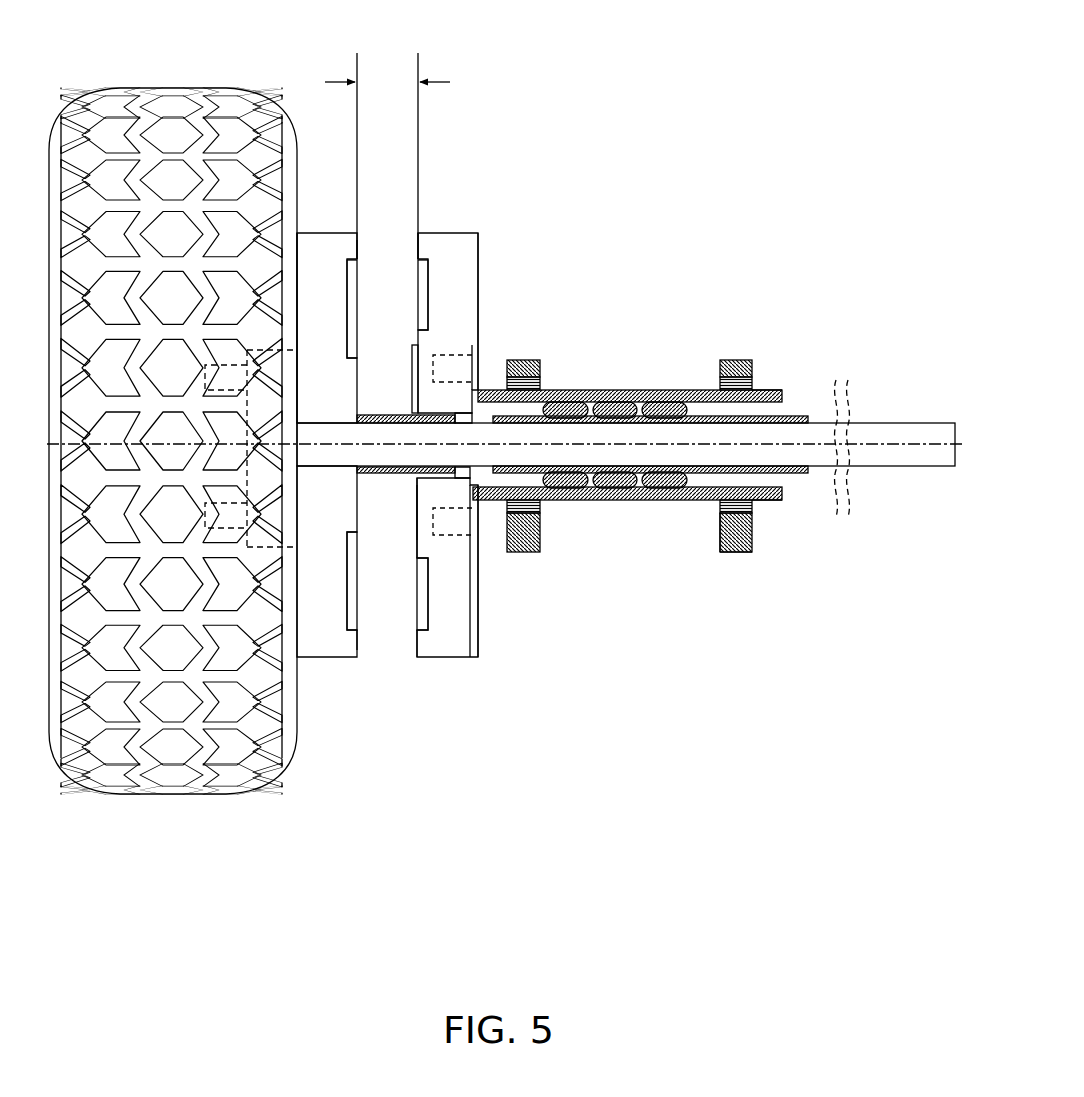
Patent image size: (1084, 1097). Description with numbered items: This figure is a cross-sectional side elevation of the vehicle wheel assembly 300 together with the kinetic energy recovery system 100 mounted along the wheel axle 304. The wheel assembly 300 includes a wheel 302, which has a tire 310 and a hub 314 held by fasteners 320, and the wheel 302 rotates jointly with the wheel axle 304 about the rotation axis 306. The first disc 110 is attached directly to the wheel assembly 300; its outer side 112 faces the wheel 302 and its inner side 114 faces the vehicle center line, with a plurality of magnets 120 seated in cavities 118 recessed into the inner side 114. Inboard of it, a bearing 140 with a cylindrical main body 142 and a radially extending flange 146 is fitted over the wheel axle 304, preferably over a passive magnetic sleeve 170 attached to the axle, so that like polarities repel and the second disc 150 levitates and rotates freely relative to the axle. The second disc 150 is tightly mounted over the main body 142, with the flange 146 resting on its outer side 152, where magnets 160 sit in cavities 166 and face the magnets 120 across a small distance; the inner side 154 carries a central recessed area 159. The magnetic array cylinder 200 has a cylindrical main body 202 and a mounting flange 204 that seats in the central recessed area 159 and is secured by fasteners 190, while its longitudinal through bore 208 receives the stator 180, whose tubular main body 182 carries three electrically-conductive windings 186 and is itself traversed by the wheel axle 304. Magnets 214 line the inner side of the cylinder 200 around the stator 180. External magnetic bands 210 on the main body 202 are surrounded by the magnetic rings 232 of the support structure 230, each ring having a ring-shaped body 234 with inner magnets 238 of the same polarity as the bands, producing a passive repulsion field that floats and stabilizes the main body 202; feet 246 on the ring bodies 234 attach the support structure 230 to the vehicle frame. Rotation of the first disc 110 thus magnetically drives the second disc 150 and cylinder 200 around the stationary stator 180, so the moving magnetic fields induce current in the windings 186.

The kinetic energy recovery system 100 is at (746, 211).
The first disc 110 is at (323, 643).
The outer side 112 is at (298, 232).
The inner side 114 is at (363, 237).
The cavities 118 is at (362, 250).
The magnets 120 is at (358, 305).
The bearing 140 is at (412, 528).
The main body 142 is at (445, 537).
The flange 146 is at (412, 541).
The second disc 150 is at (448, 645).
The outer side 152 is at (418, 236).
The inner side 154 is at (479, 262).
The central recessed area 159 is at (482, 542).
The magnets 160 is at (418, 321).
The cavities 166 is at (418, 262).
The passive magnetic sleeve 170 is at (388, 474).
The stator 180 is at (770, 408).
The main body 182 is at (650, 501).
The electrically-conductive windings 186 is at (567, 488).
The fastener 190 is at (455, 355).
The magnetic array cylinder 200 is at (631, 379).
The main body 202 is at (570, 388).
The mounting flange 204 is at (472, 368).
The longitudinal through bore 208 is at (798, 406).
The magnetic bands 210 is at (772, 389).
The magnets 214 is at (724, 560).
The support structure 230 is at (749, 553).
The magnetic rings 232 is at (527, 354).
The ring-shaped body 234 is at (742, 366).
The magnets 238 is at (762, 384).
The feet 246 is at (522, 553).
The vehicle wheel assembly 300 is at (166, 52).
The wheel 302 is at (152, 88).
The wheel axle 304 is at (905, 422).
The rotation axis 306 is at (880, 444).
The tire 310 is at (115, 92).
The hub 314 is at (249, 550).
The fasteners 320 is at (232, 365).